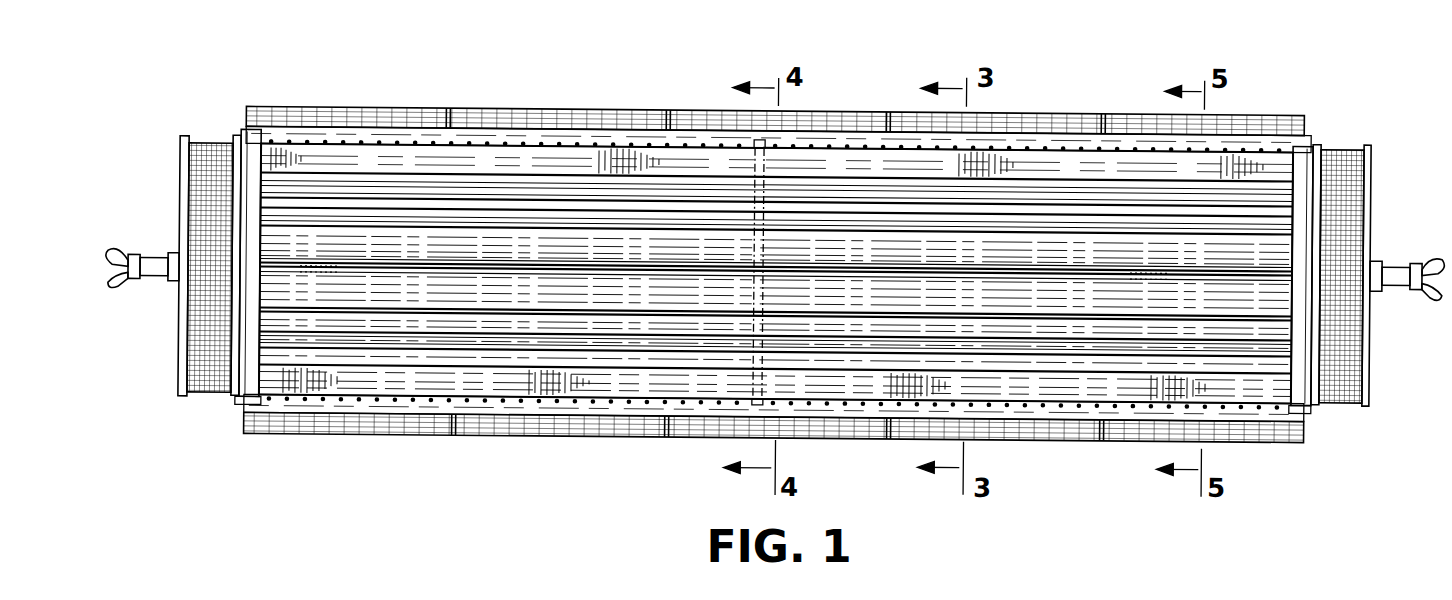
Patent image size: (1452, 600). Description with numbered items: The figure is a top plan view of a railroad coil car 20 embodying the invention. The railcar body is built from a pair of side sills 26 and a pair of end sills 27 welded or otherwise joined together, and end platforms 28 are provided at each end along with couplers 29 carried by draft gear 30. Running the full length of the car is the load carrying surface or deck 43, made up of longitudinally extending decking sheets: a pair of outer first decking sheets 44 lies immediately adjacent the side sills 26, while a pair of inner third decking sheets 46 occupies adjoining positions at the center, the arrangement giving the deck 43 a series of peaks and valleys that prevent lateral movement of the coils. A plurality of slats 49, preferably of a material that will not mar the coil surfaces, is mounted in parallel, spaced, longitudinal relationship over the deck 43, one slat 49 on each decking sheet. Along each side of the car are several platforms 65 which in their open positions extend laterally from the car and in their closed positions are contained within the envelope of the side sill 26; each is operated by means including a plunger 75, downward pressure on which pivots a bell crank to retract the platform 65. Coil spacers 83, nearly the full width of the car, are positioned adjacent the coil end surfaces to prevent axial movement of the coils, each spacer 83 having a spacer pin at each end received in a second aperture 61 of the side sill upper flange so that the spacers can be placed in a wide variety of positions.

The railroad coil car 20 is at (520, 92).
The side sill 26 is at (1290, 136).
The end sill 27 is at (236, 408).
The end platform 28 is at (185, 360).
The coupler 29 is at (128, 258).
The draft gear 30 is at (158, 256).
The deck 43 is at (608, 392).
The first decking sheet 44 is at (1035, 162).
The third decking sheet 46 is at (262, 278).
The slat 49 is at (305, 242).
The second aperture 61 is at (995, 147).
The platform 65 is at (357, 114).
The plunger 75 is at (675, 144).
The coil spacer 83 is at (764, 294).